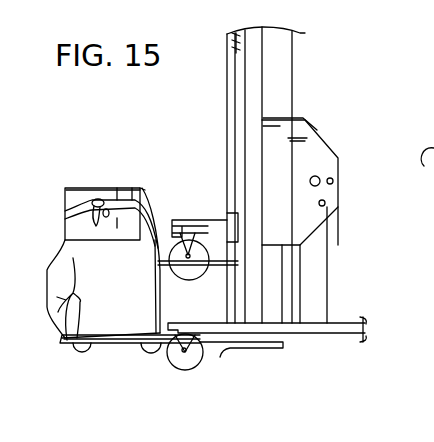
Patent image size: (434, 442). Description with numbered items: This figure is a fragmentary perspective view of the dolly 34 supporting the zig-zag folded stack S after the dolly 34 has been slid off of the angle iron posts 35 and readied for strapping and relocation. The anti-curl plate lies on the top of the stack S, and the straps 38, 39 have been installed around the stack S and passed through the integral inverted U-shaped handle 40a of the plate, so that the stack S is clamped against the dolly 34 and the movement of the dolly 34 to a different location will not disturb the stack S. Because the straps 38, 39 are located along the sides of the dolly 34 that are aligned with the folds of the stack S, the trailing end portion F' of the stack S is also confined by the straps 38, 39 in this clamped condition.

The dolly 34 is at (117, 349).
The angle iron posts 35 is at (208, 225).
The strap 38 is at (68, 212).
The strap 39 is at (128, 187).
The U-shaped handle 40a is at (97, 200).
The stack S is at (116, 290).
The trailing end portion F' is at (36, 266).